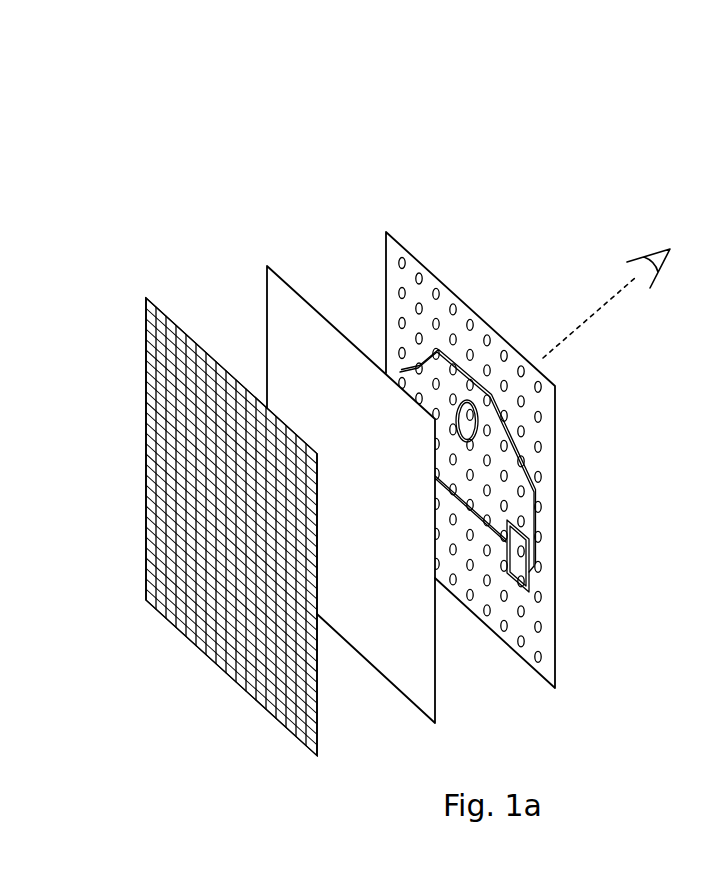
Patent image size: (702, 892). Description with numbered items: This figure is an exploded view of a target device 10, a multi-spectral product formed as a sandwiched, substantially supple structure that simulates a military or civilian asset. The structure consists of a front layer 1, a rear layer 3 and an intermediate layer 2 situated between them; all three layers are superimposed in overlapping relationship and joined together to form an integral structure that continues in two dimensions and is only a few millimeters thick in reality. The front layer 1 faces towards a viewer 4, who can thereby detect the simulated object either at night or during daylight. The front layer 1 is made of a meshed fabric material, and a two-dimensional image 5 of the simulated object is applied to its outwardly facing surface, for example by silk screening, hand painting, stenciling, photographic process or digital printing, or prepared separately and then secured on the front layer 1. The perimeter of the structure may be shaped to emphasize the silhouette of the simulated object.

The target device 10 is at (275, 169).
The front layer 1 is at (470, 308).
The intermediate layer 2 is at (275, 289).
The rear layer 3 is at (150, 342).
The viewer 4 is at (613, 286).
The two-dimensional image 5 is at (537, 522).